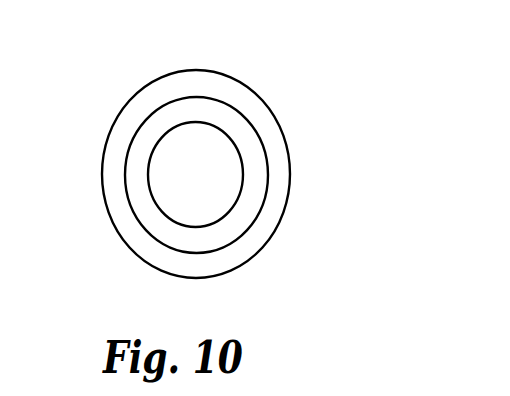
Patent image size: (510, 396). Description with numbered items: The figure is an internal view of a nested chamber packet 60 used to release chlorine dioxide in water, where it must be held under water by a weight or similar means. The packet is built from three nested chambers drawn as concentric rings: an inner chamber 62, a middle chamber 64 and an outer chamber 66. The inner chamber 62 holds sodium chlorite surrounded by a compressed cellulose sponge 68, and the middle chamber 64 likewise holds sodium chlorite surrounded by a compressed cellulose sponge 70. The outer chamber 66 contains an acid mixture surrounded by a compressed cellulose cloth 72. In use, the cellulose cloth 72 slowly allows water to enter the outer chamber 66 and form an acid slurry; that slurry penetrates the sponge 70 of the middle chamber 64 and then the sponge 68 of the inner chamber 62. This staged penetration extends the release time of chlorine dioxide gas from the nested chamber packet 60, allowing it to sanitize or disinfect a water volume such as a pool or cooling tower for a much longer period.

The nested chamber packet 60 is at (318, 103).
The inner chamber 62 is at (168, 182).
The middle chamber 64 is at (253, 183).
The outer chamber 66 is at (278, 150).
The compressed cellulose sponge 68 is at (227, 215).
The compressed cellulose sponge 70 is at (182, 98).
The compressed cellulose cloth 72 is at (112, 123).